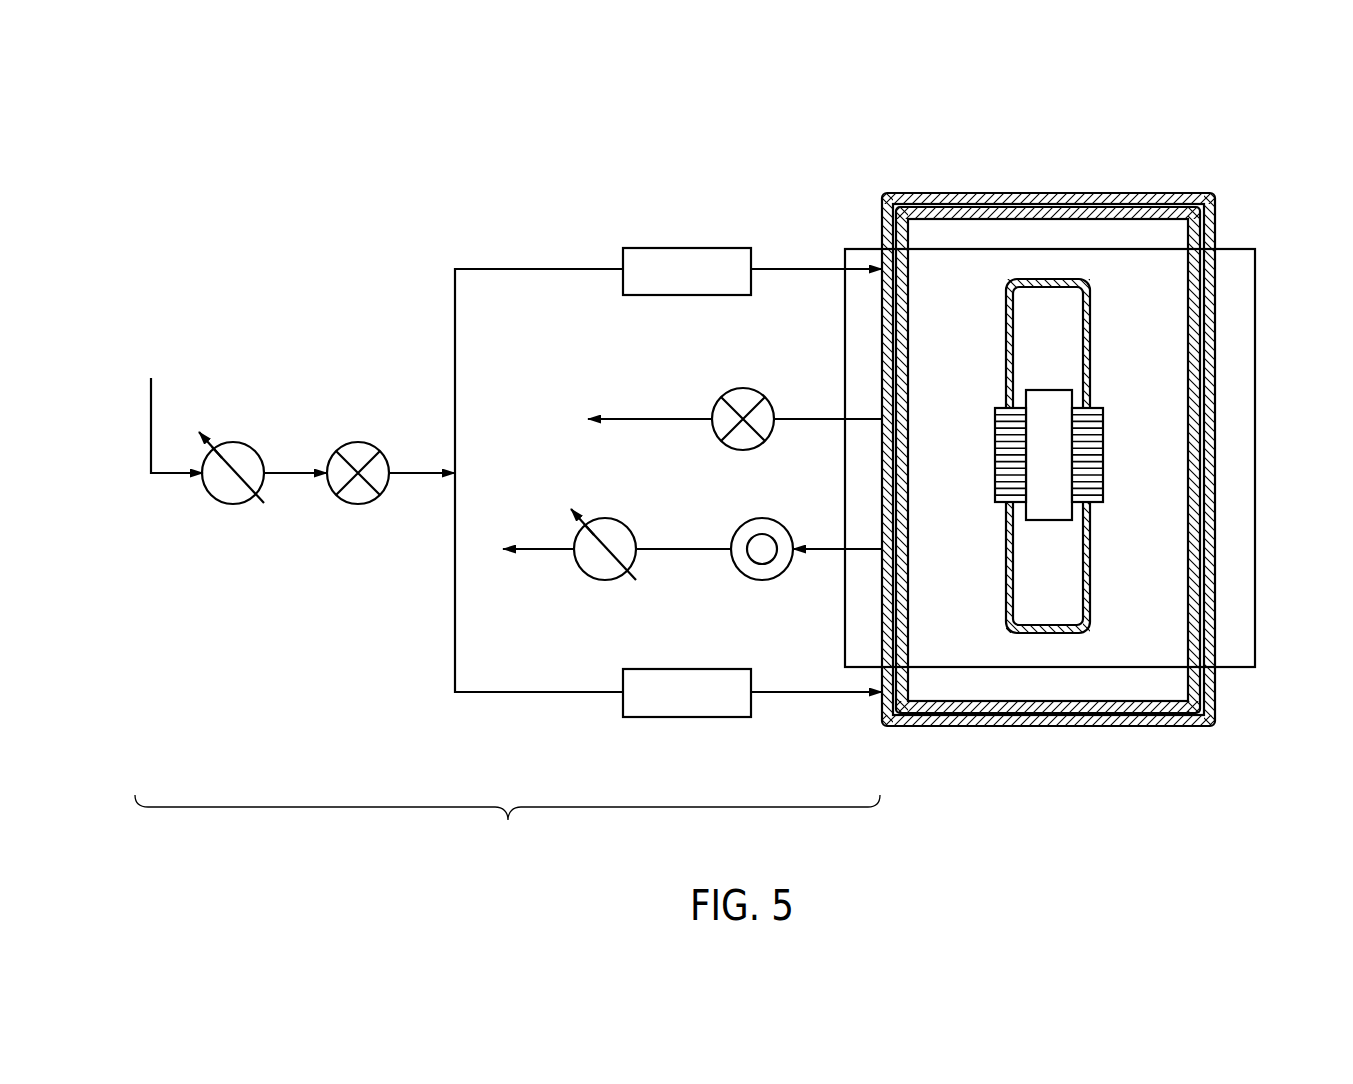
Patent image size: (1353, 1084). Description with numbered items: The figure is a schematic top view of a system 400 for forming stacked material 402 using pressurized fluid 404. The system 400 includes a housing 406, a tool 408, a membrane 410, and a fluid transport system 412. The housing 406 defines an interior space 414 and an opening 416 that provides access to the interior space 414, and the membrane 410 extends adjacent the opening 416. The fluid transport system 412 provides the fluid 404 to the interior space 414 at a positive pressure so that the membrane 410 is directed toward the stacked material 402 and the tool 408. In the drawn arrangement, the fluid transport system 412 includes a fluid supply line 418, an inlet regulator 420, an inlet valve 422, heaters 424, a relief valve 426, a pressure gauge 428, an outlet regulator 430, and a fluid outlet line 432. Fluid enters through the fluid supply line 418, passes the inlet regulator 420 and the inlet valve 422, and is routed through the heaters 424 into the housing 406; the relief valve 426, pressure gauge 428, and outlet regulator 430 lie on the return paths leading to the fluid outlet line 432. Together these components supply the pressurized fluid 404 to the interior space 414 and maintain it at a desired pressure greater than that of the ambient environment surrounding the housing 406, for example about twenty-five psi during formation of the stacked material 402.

The system 400 is at (1219, 134).
The stacked material 402 is at (1088, 465).
The pressurized fluid 404 is at (520, 268).
The housing 406 is at (982, 206).
The tool 408 is at (1056, 505).
The membrane 410 is at (1055, 598).
The fluid transport system 412 is at (507, 821).
The interior space 414 is at (1058, 338).
The opening 416 is at (1092, 375).
The fluid supply line 418 is at (150, 458).
The inlet regulator 420 is at (227, 505).
The inlet valve 422 is at (348, 505).
The heaters 424 is at (695, 248).
The relief valve 426 is at (747, 388).
The pressure gauge 428 is at (758, 582).
The outlet regulator 430 is at (603, 582).
The fluid outlet line 432 is at (547, 553).